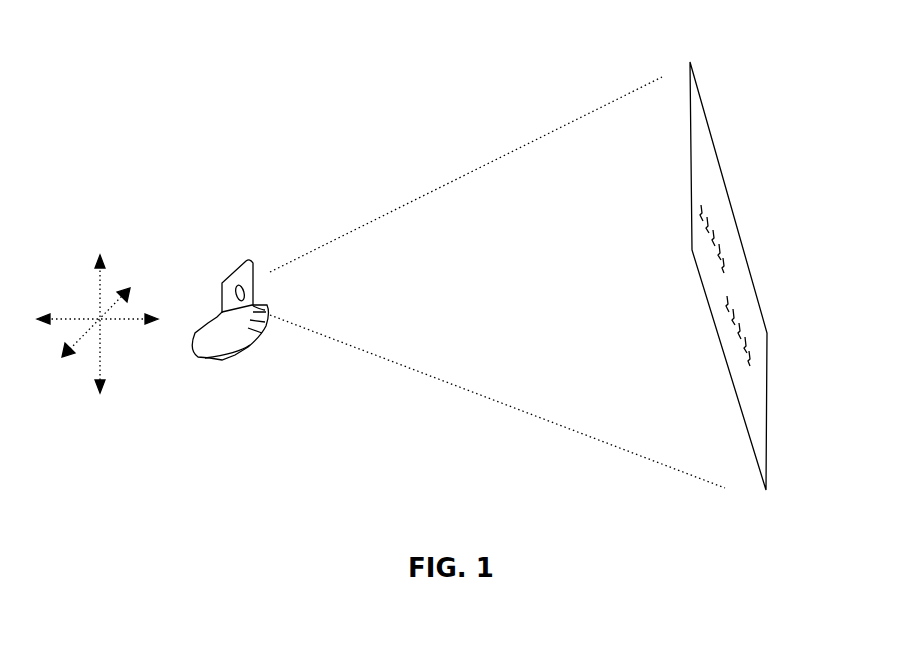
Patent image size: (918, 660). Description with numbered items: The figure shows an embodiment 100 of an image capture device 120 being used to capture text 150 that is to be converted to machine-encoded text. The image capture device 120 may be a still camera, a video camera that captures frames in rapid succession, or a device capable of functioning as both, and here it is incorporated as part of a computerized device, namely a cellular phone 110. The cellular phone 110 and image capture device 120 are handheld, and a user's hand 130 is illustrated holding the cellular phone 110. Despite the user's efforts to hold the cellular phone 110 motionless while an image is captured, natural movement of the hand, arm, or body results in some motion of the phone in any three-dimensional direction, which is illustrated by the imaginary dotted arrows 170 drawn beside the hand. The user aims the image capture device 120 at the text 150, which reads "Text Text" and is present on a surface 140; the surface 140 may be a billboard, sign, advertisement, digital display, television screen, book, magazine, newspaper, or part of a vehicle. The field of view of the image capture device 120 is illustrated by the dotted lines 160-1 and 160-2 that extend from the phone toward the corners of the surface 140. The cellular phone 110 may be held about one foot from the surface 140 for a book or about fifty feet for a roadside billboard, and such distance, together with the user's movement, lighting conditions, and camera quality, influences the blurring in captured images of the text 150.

The embodiment 100 is at (186, 118).
The cellular phone 110 is at (247, 262).
The image capture device 120 is at (232, 273).
The user's hand 130 is at (208, 358).
The surface 140 is at (690, 62).
The text 150 is at (700, 222).
The dotted line 160-1 is at (570, 123).
The dotted line 160-2 is at (535, 416).
The imaginary dotted arrows 170 is at (99, 258).